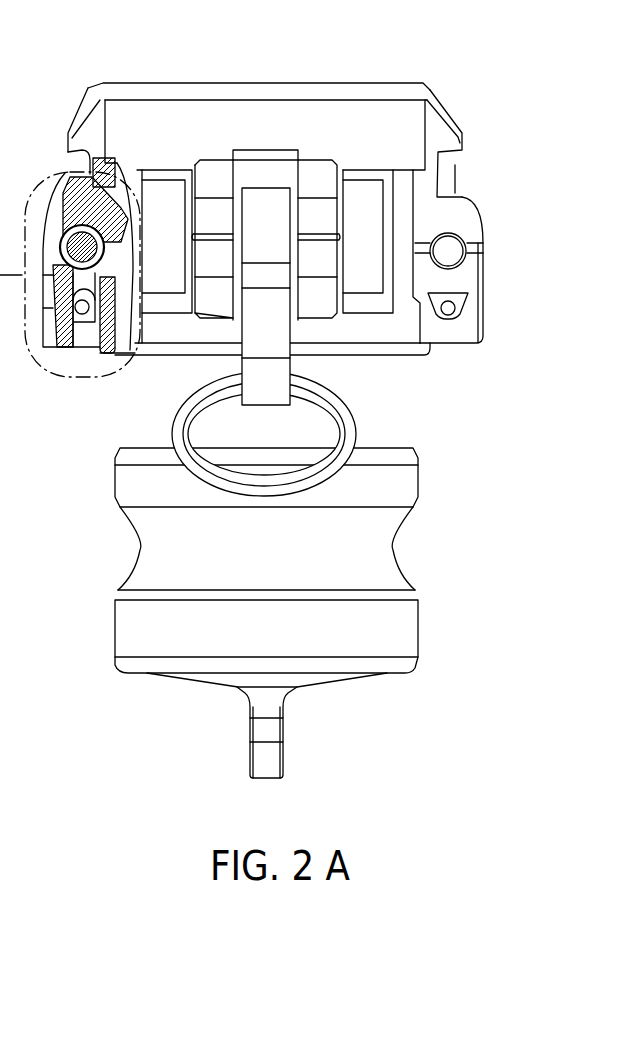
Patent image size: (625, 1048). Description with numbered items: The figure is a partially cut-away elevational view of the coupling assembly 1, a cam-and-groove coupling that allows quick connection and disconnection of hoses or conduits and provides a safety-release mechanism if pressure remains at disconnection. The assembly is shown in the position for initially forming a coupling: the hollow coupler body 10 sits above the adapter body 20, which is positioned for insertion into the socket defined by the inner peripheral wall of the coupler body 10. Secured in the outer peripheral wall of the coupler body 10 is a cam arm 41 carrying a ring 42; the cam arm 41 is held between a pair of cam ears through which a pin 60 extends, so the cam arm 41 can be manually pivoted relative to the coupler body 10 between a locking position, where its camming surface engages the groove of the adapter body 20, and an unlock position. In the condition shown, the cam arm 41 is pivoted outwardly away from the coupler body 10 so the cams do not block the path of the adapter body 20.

The coupling assembly 1 is at (77, 63).
The coupler body 10 is at (261, 83).
The adapter body 20 is at (399, 526).
The cam arm 41 is at (281, 351).
The ring 42 is at (351, 417).
The pin 60 is at (447, 244).